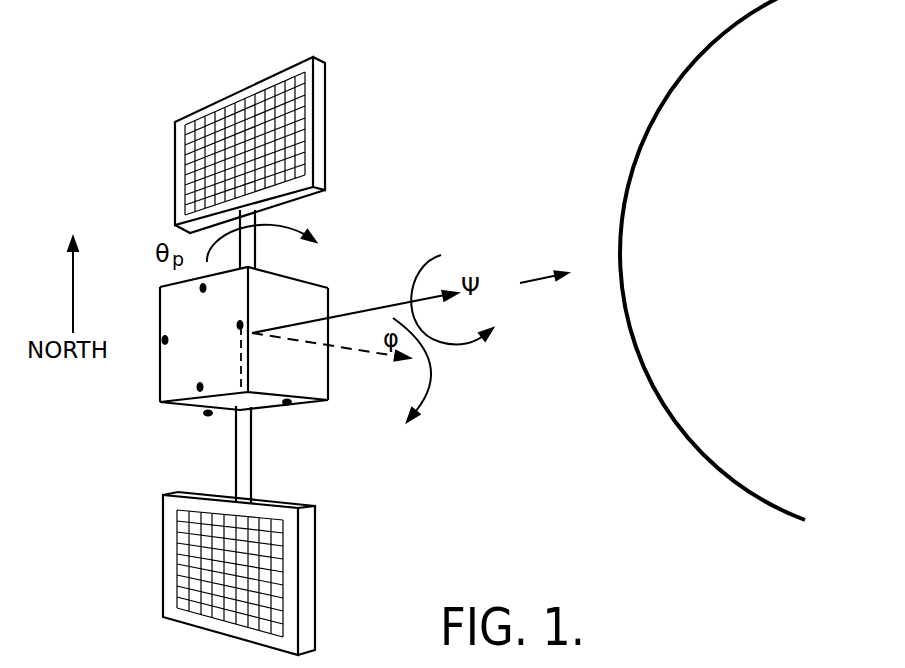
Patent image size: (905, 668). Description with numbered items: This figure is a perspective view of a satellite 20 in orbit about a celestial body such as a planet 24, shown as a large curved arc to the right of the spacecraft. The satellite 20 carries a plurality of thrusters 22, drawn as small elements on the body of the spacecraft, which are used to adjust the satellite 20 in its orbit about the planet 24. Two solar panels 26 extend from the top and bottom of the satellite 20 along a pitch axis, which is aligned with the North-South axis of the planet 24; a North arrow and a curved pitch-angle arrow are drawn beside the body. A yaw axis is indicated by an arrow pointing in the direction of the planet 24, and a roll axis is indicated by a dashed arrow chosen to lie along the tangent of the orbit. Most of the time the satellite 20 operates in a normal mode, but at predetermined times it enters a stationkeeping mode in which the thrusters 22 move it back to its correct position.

The satellite 20 is at (118, 386).
The thrusters 22 is at (178, 282).
The planet 24 is at (635, 158).
The solar panels 26 is at (175, 123).